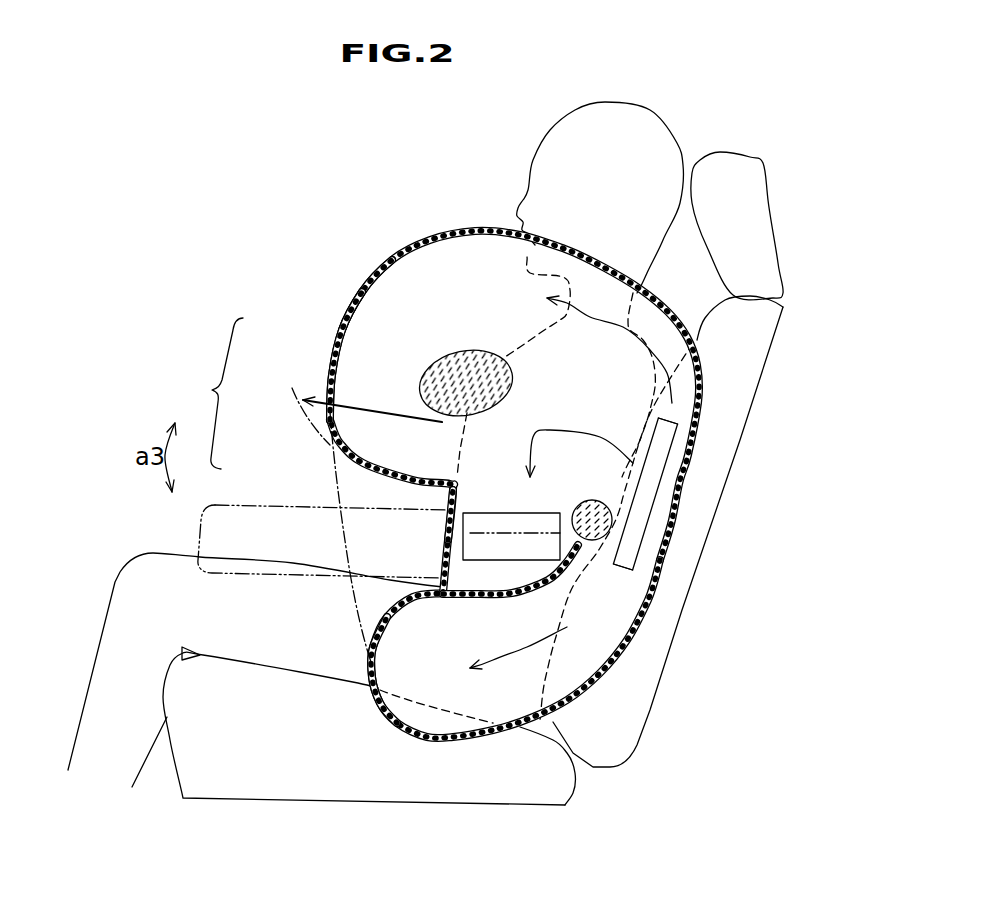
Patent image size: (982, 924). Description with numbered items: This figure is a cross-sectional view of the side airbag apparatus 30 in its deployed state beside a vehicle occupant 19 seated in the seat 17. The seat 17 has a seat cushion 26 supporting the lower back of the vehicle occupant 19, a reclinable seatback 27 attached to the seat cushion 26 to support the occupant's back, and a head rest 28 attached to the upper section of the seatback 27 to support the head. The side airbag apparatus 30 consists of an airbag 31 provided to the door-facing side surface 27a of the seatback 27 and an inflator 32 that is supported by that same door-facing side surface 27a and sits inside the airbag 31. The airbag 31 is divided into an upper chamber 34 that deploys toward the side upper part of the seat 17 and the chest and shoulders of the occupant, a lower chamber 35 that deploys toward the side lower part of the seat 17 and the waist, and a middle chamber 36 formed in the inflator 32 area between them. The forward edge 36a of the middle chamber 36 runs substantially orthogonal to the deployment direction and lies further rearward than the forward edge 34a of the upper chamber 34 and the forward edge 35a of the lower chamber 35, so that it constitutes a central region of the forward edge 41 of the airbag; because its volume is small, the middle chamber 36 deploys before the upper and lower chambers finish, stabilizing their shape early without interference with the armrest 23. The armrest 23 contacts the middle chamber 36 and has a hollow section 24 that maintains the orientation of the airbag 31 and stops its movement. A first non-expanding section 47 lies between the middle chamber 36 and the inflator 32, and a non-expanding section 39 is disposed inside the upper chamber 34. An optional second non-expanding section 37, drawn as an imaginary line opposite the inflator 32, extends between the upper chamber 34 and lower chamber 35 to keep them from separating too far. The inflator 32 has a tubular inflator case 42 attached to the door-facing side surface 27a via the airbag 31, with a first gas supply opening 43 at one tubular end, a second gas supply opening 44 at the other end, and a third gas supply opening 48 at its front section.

The seat 17 is at (760, 133).
The vehicle occupant 19 is at (630, 100).
The armrest 23 is at (245, 577).
The hollow section 24 is at (560, 548).
The seat cushion 26 is at (270, 787).
The seatback 27 is at (705, 531).
The door-facing side surface 27a is at (745, 365).
The head rest 28 is at (752, 207).
The side airbag apparatus 30 is at (435, 414).
The airbag 31 is at (211, 393).
The inflator 32 is at (629, 542).
The upper chamber 34 is at (352, 363).
The forward edge of the upper chamber 34a is at (340, 330).
The lower chamber 35 is at (378, 675).
The forward edge of the lower chamber 35a is at (385, 648).
The middle chamber 36 is at (400, 500).
The forward edge of the middle chamber 36a is at (455, 518).
The second non-expanding section 37 is at (319, 512).
The non-expanding section 39 is at (455, 368).
The forward edge of the airbag 41 is at (340, 297).
The inflator case 42 is at (660, 485).
The first gas supply opening 43 is at (670, 420).
The second gas supply opening 44 is at (623, 573).
The first non-expanding section 47 is at (613, 517).
The third gas supply opening 48 is at (640, 477).